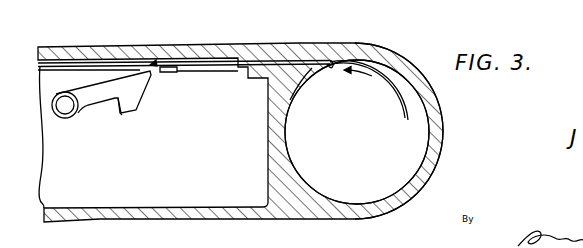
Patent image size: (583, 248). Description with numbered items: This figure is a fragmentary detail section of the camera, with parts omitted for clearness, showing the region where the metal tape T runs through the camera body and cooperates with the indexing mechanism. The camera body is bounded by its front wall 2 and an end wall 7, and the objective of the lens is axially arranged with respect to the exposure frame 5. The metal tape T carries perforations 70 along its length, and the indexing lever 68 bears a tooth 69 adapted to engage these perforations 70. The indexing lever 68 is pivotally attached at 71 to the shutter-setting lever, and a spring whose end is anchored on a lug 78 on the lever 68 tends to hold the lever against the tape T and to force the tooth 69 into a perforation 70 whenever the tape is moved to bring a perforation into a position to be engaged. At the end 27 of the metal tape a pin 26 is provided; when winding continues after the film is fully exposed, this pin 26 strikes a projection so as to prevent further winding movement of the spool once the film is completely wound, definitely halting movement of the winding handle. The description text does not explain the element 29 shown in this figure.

The front wall 2 is at (198, 216).
The exposure frame 5 is at (193, 64).
The end wall 7 is at (444, 129).
The pin 26 is at (323, 67).
The end of the metal tape 27 is at (386, 92).
The tape guide opening 29 is at (312, 68).
The indexing lever 68 is at (143, 95).
The tooth 69 is at (154, 60).
The perforations 70 is at (160, 66).
The pivot 71 is at (64, 110).
The lug 78 is at (120, 113).
The metal tape T is at (206, 71).